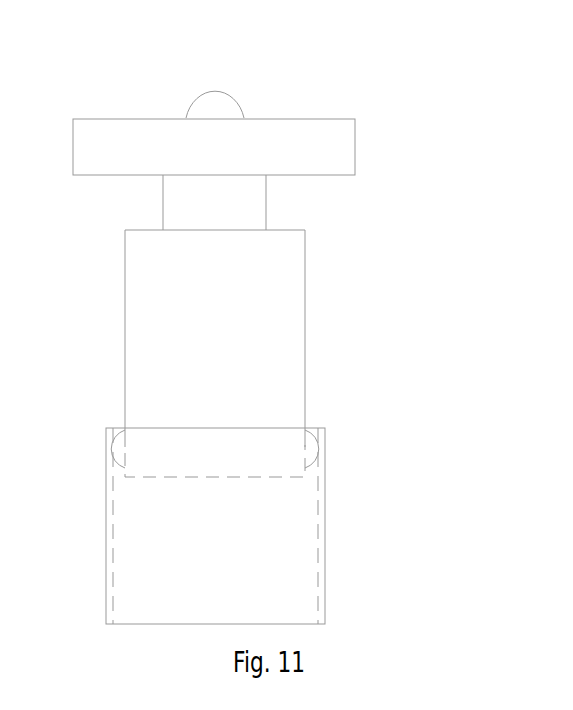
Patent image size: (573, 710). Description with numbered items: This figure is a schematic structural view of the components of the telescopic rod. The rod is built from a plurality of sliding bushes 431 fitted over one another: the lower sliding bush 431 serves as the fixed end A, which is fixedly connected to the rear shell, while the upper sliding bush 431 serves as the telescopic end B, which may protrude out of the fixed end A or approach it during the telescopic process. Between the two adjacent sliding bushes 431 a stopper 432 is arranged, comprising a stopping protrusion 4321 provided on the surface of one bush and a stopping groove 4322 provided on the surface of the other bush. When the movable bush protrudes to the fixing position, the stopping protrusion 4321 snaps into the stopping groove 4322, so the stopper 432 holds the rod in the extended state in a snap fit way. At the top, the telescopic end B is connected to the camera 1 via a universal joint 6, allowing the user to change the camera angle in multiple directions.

The camera 1 is at (217, 93).
The universal joint 6 is at (245, 202).
The telescopic end B is at (162, 342).
The fixed end A is at (162, 540).
The sliding bush 431 is at (221, 400).
The stopper 432 is at (309, 453).
The stopping protrusion 4321 is at (275, 490).
The stopping groove 4322 is at (318, 445).